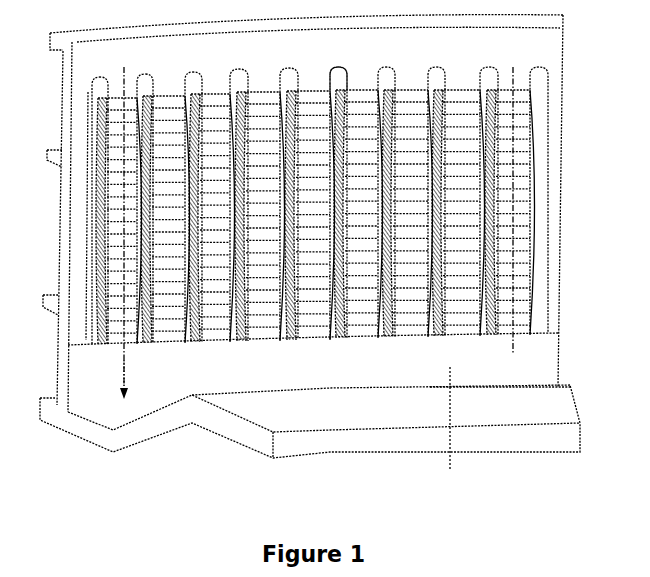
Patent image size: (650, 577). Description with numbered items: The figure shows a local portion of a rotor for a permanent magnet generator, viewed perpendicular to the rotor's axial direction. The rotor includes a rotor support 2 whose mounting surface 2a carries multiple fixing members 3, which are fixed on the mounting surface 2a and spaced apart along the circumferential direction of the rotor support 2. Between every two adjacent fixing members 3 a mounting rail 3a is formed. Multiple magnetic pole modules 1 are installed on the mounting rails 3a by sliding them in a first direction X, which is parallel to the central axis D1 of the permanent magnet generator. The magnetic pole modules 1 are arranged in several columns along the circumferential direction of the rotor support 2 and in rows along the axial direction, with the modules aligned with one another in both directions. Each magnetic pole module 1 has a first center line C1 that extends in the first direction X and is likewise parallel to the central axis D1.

The magnetic pole module 1 is at (533, 198).
The rotor support 2 is at (62, 110).
The mounting surface 2a is at (557, 63).
The fixing member 3 is at (335, 75).
The mounting rail 3a is at (353, 78).
The first center line C1 is at (128, 352).
The first direction X is at (113, 379).
The central axis D1 is at (453, 437).